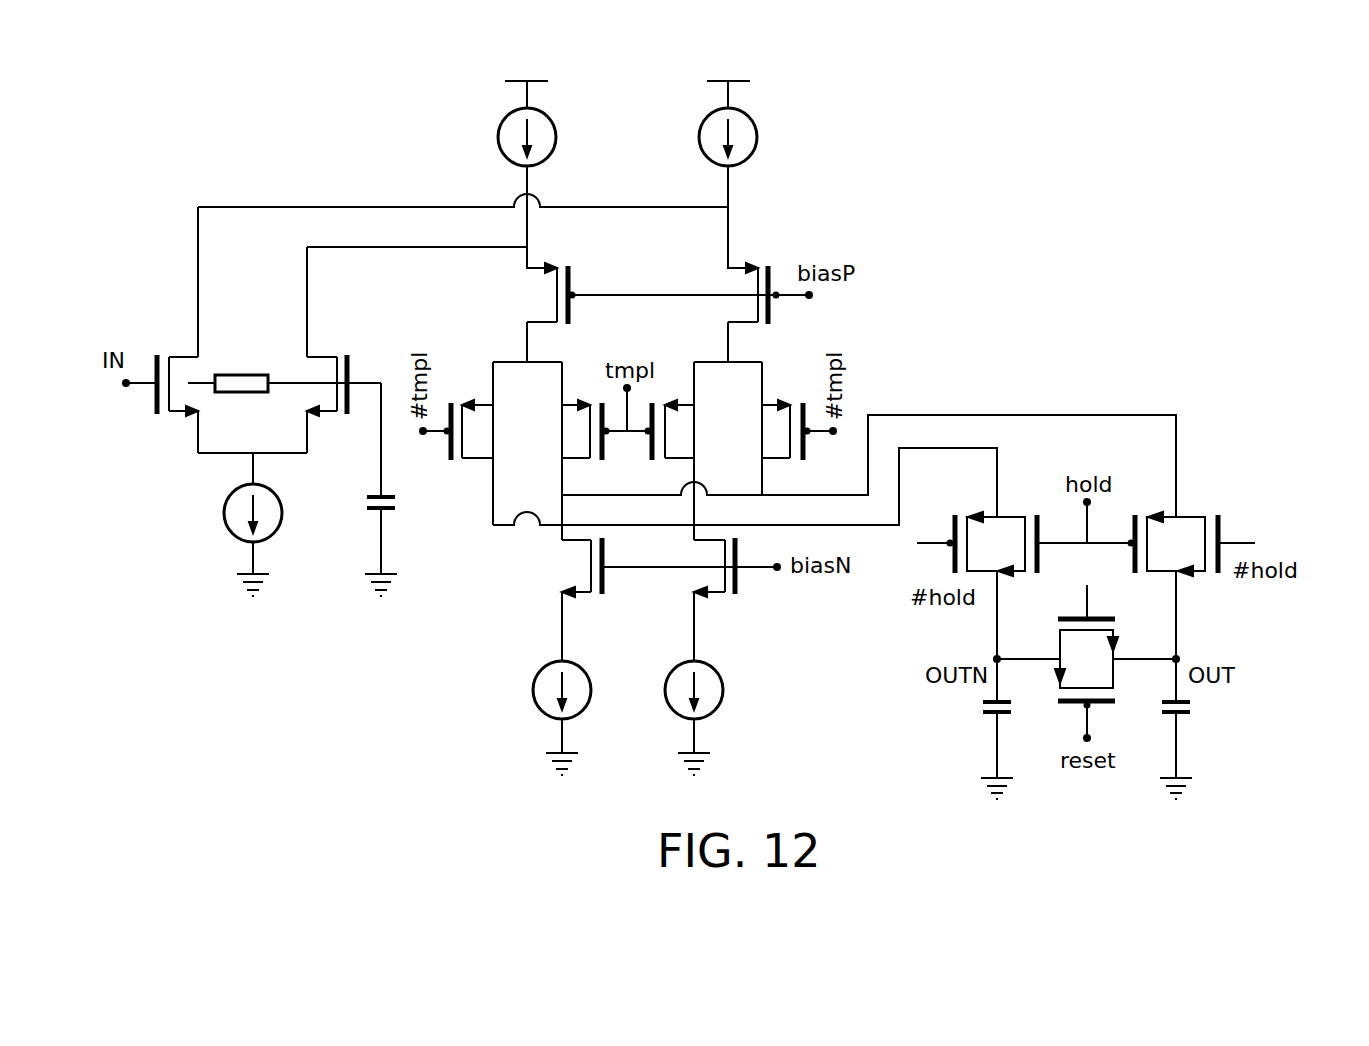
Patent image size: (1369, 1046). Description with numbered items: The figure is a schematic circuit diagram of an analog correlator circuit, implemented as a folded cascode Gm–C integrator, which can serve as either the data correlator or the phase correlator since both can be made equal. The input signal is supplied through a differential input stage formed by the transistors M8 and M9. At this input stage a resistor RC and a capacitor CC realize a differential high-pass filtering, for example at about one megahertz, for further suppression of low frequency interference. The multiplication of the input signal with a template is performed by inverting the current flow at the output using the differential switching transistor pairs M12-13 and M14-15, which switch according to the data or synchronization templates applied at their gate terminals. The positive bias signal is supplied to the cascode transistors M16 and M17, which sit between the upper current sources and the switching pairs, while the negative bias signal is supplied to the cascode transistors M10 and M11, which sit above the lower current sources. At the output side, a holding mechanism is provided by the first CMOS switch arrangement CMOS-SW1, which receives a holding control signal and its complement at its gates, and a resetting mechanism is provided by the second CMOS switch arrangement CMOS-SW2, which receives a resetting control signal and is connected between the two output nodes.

The input stage transistor M8 is at (174, 404).
The input stage transistor M9 is at (332, 404).
The cascode transistor M10 is at (584, 656).
The cascode transistor M11 is at (712, 656).
The differential switching transistor pair M12-13 is at (535, 451).
The differential switching transistor pair M14-15 is at (744, 451).
The cascode transistor M16 is at (524, 312).
The cascode transistor M17 is at (764, 312).
The resistor RC is at (284, 369).
The capacitor CC is at (366, 489).
The first CMOS switch arrangement CMOS-SW1 is at (1027, 477).
The second CMOS switch arrangement CMOS-SW2 is at (1144, 634).